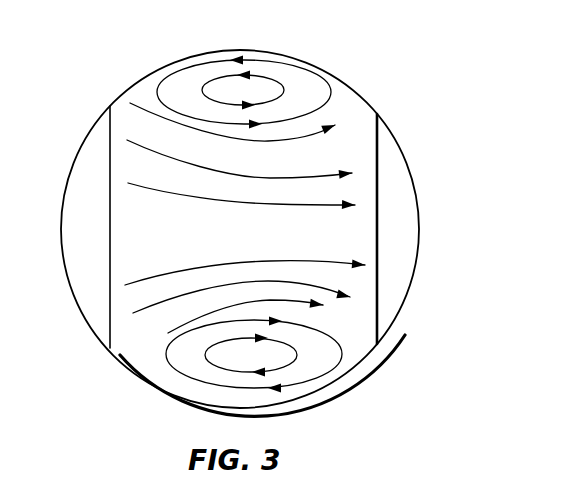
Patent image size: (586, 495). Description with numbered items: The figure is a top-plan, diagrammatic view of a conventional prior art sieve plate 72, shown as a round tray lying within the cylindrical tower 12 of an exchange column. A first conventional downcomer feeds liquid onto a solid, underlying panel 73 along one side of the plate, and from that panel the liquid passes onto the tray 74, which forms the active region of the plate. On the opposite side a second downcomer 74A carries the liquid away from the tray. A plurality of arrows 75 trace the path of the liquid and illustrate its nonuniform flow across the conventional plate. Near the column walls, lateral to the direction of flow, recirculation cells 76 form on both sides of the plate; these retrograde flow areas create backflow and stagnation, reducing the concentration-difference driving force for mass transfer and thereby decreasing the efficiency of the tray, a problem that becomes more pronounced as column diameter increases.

The cylindrical tower 12 is at (400, 150).
The prior art sieve plate 72 is at (345, 113).
The solid underlying panel 73 is at (92, 283).
The tray 74 is at (317, 234).
The second downcomer 74A is at (404, 273).
The arrows 75 is at (132, 145).
The recirculation cells 76 is at (207, 82).